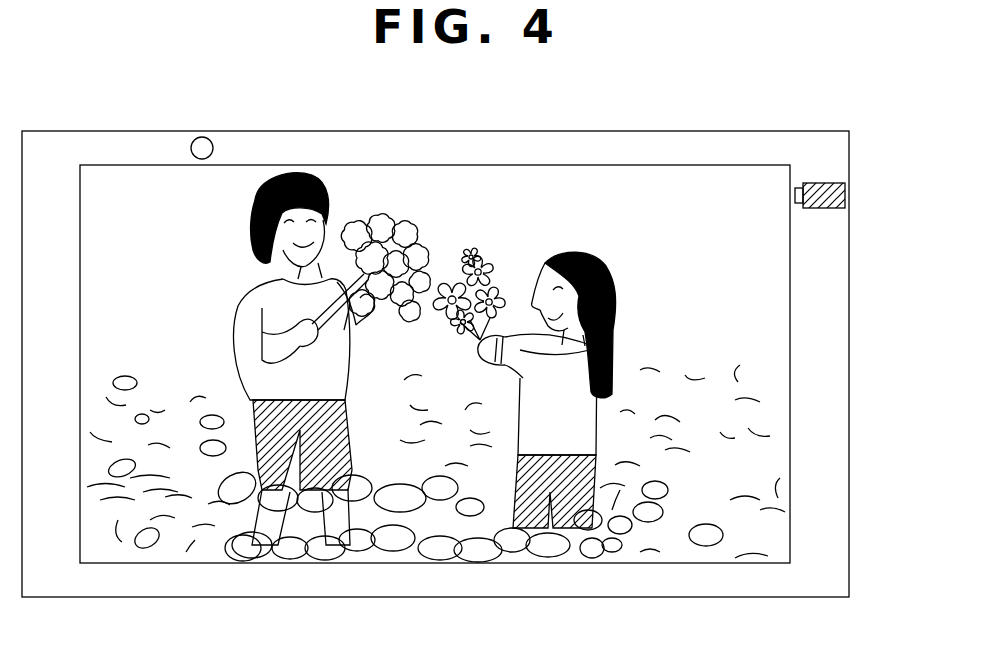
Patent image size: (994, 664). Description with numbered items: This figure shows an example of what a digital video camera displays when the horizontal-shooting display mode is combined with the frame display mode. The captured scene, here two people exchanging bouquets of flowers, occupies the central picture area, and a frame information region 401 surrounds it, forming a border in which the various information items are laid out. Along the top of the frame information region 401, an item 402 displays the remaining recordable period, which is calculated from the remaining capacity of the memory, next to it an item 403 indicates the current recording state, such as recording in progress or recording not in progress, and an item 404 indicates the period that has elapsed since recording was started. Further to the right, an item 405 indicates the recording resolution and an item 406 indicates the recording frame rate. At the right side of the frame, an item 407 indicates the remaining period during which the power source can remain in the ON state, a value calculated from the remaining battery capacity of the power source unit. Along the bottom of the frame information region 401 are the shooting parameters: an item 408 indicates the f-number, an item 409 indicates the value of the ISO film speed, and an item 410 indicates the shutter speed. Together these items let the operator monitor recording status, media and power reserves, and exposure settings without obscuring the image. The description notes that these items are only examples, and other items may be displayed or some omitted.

The frame information region 401 is at (497, 131).
The remaining recordable period item 402 is at (104, 131).
The recording state item 403 is at (236, 131).
The elapsed recording period item 404 is at (344, 131).
The recording resolution item 405 is at (617, 131).
The recording frame rate item 406 is at (777, 131).
The remaining power period item 407 is at (847, 192).
The f-number item 408 is at (75, 597).
The ISO film speed item 409 is at (248, 597).
The shutter speed item 410 is at (362, 597).